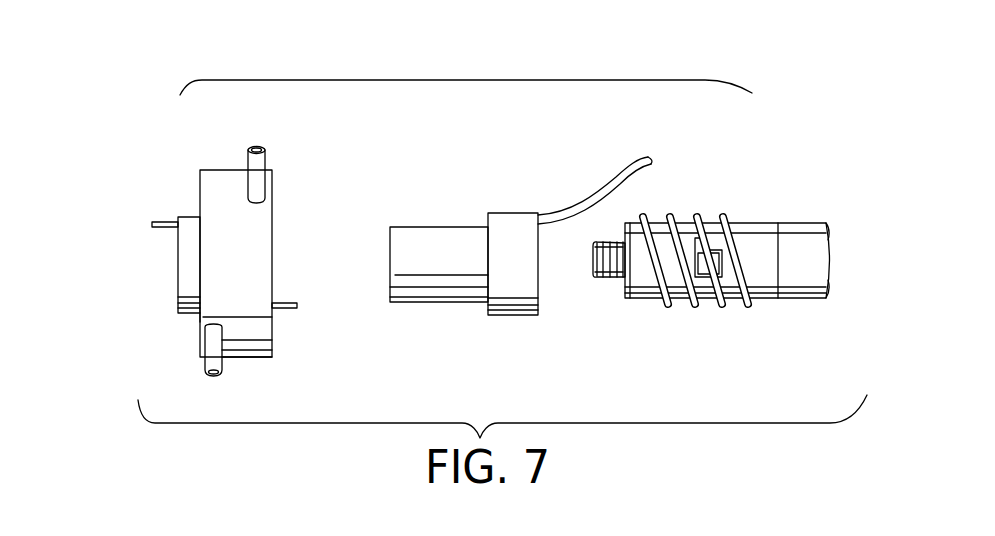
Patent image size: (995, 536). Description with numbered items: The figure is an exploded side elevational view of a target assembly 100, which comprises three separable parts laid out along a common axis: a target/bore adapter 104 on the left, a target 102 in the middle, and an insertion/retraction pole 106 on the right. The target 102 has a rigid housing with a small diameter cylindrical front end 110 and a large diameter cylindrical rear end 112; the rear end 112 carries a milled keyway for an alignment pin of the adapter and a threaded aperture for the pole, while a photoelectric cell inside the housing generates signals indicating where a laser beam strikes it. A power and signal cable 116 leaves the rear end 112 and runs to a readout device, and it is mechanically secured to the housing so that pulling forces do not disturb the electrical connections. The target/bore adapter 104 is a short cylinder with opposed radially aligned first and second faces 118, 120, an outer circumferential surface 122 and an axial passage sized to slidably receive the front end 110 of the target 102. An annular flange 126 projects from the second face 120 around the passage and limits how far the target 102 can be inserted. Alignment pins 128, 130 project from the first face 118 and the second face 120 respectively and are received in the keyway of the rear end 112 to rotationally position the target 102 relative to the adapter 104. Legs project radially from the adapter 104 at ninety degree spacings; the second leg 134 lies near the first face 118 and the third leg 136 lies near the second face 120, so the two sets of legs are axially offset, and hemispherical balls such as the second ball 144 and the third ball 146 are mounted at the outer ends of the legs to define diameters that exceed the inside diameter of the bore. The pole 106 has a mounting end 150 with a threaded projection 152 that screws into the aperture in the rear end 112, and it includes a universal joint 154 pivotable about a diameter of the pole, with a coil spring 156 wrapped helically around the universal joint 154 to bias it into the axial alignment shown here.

The target assembly 100 is at (472, 78).
The target 102 is at (470, 170).
The target/bore adapter 104 is at (212, 150).
The insertion/retraction pole 106 is at (767, 177).
The small diameter cylindrical front end 110 is at (420, 226).
The large diameter cylindrical rear end 112 is at (515, 212).
The power and signal cable 116 is at (640, 158).
The first face 118 is at (272, 230).
The second face 120 is at (200, 320).
The outer circumferential surface 122 is at (253, 359).
The annular flange 126 is at (190, 216).
The alignment pin 128 is at (285, 313).
The alignment pin 130 is at (165, 221).
The second leg 134 is at (258, 163).
The third leg 136 is at (205, 360).
The second ball 144 is at (256, 146).
The third ball 146 is at (213, 378).
The mounting end 150 is at (625, 293).
The threaded projection 152 is at (602, 280).
The universal joint 154 is at (707, 306).
The coil spring 156 is at (748, 306).